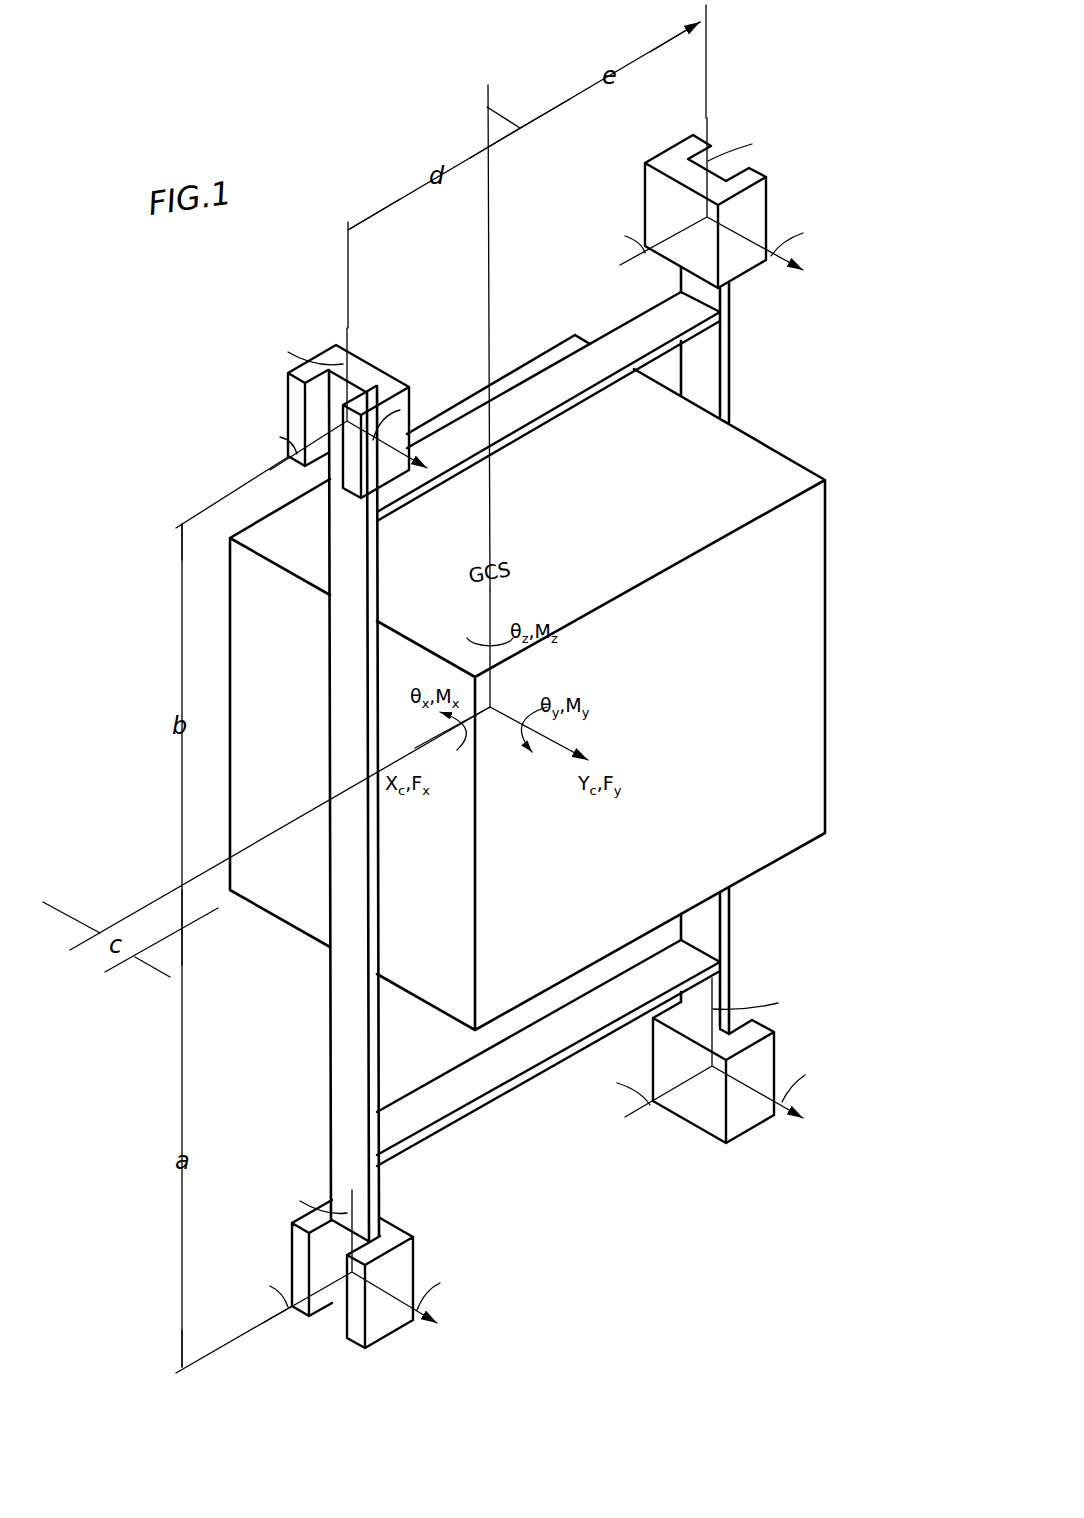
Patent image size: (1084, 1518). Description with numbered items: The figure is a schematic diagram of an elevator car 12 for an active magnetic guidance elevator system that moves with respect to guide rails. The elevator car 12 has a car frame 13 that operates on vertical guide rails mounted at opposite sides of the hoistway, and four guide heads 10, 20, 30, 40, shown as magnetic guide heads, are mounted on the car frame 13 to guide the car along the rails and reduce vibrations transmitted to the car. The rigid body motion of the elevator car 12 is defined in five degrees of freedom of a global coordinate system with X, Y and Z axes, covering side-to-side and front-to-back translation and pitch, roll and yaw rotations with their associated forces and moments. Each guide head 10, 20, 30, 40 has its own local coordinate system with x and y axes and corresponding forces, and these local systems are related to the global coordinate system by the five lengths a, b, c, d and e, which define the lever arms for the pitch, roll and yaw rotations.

The guide head 10 is at (395, 1232).
The guide head 20 is at (381, 379).
The guide head 30 is at (657, 188).
The guide head 40 is at (717, 1123).
The elevator car 12 is at (752, 667).
The car frame 13 is at (730, 348).